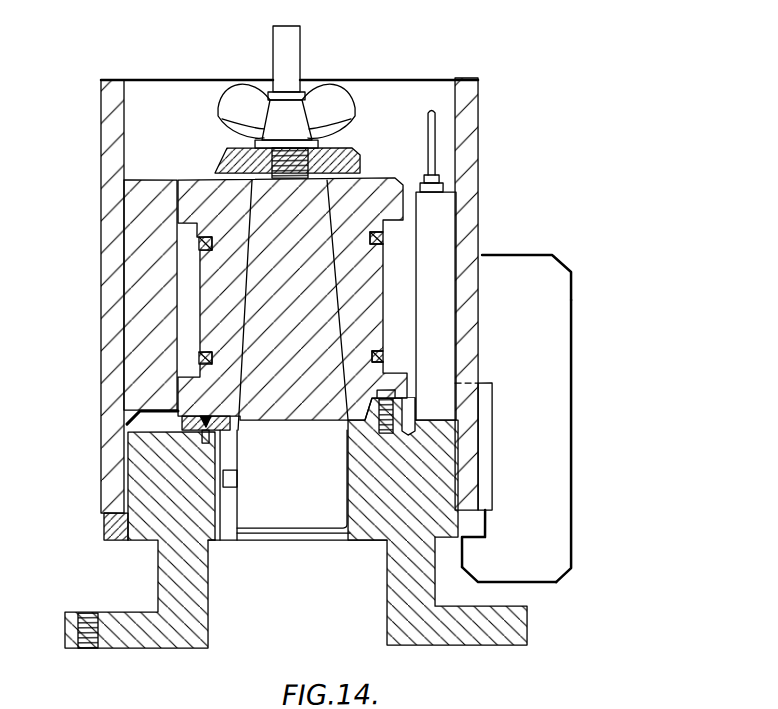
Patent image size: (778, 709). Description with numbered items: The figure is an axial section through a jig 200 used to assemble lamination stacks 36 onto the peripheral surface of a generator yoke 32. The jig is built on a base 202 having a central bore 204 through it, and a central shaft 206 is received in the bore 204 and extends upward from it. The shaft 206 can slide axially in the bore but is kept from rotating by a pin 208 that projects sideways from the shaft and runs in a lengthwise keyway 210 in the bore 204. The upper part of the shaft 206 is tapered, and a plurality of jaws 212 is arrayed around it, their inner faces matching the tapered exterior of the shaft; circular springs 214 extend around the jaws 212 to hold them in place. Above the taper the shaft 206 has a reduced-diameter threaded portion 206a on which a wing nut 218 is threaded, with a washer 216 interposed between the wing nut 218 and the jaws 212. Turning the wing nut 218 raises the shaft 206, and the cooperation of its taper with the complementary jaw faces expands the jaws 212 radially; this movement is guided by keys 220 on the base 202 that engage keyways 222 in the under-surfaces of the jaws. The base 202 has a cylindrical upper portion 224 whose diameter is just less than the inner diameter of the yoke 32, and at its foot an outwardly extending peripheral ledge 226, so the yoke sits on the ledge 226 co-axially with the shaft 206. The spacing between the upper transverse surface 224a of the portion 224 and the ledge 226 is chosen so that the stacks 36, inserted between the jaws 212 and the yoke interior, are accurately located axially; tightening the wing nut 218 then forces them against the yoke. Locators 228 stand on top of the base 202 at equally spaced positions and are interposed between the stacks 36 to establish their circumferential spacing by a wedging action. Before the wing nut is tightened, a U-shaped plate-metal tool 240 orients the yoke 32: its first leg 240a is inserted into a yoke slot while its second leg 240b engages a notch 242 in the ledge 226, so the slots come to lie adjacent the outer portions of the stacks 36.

The jig 200 is at (283, 280).
The yoke 32 is at (99, 154).
The stacks 36 is at (101, 320).
The reduced diameter threaded portion 206a is at (279, 45).
The wing nut 218 is at (334, 96).
The washer 216 is at (353, 152).
The locators 228 is at (432, 234).
The circular springs 214 is at (196, 245).
The jaws 212 is at (347, 276).
The upper transverse surface 224a is at (135, 409).
The keys 220 is at (123, 433).
The keyways 222 is at (232, 428).
The pin 208 is at (232, 480).
The cylindrical upper portion 224 is at (392, 471).
The central shaft 206 is at (288, 523).
The keyway 210 is at (219, 532).
The central bore 204 is at (352, 515).
The peripheral ledge 226 is at (115, 536).
The base 202 is at (131, 634).
The tool 240 is at (548, 446).
The first leg 240a is at (551, 328).
The second leg 240b is at (540, 556).
The notch 242 is at (463, 532).